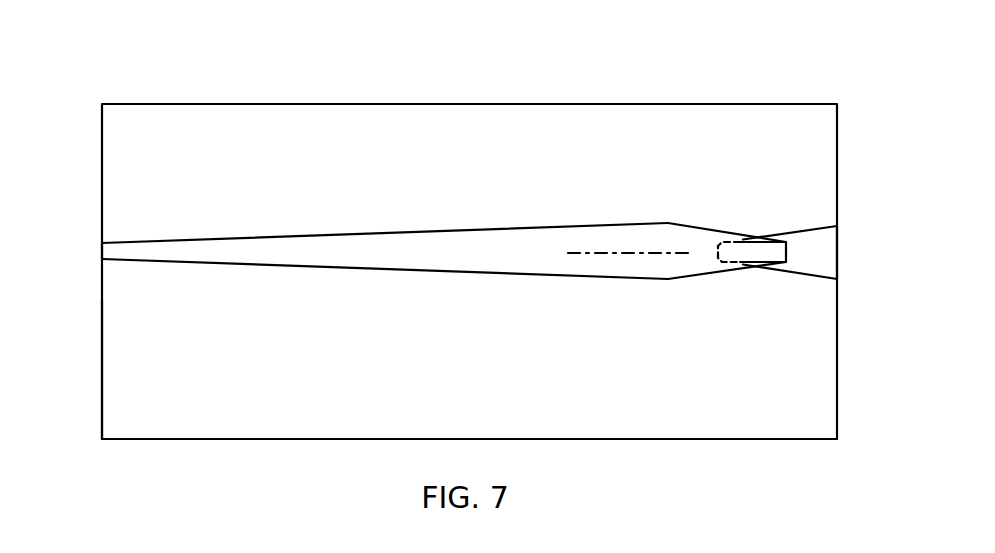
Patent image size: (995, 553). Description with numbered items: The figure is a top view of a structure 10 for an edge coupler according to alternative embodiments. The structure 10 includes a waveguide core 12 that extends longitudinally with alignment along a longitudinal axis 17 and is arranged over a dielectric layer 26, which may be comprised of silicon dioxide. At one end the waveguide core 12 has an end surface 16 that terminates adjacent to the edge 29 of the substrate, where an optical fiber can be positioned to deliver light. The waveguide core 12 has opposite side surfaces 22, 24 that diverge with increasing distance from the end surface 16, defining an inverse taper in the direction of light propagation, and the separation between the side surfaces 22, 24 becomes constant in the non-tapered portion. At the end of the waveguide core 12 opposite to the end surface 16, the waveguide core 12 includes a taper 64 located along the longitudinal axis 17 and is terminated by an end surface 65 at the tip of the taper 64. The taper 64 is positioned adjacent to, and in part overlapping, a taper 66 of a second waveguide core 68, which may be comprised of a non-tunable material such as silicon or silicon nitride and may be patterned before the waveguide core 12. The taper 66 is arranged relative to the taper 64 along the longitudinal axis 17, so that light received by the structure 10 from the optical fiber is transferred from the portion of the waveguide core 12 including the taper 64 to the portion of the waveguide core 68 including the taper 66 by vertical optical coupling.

The structure 10 is at (106, 57).
The waveguide core 12 is at (505, 258).
The end surface 16 is at (102, 254).
The longitudinal axis 17 is at (602, 252).
The side surface 22 is at (320, 233).
The side surface 24 is at (330, 267).
The dielectric layer 26 is at (176, 403).
The edge 29 is at (102, 337).
The taper 64 is at (698, 238).
The end surface 65 is at (786, 248).
The taper 66 is at (807, 262).
The waveguide core 68 is at (806, 204).